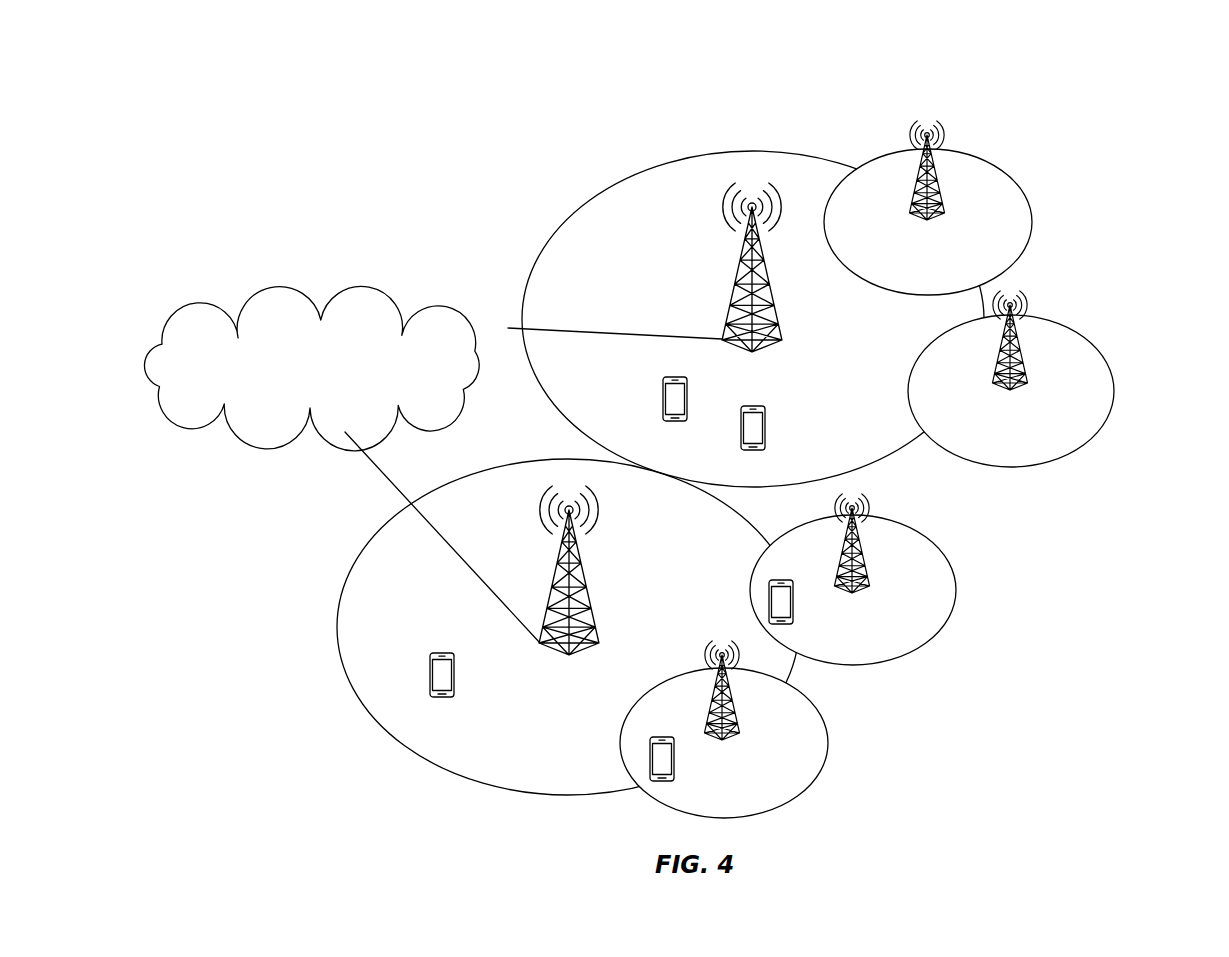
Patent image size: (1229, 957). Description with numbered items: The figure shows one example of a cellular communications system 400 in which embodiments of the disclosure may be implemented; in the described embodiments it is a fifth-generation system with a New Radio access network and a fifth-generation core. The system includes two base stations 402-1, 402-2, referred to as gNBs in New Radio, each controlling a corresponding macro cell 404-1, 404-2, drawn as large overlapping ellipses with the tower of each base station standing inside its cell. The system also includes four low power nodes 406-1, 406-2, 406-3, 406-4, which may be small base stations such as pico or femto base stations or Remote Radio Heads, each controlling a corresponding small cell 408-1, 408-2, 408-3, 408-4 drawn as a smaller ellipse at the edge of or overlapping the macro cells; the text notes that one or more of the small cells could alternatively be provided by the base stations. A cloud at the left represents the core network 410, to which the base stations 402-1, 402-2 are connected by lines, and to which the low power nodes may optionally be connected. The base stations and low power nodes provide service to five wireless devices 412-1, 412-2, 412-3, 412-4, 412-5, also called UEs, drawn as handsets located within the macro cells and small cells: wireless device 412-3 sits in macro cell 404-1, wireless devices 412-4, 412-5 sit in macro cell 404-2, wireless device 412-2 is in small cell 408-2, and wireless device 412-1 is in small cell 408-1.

The cellular communications system 400 is at (1102, 111).
The base station 402-1 is at (590, 593).
The base station 402-2 is at (770, 294).
The macro cell 404-1 is at (432, 772).
The macro cell 404-2 is at (759, 150).
The low power node 406-1 is at (737, 722).
The low power node 406-2 is at (860, 578).
The low power node 406-3 is at (1022, 373).
The low power node 406-4 is at (931, 201).
The small cell 408-1 is at (826, 746).
The small cell 408-2 is at (957, 601).
The small cell 408-3 is at (1113, 398).
The small cell 408-4 is at (1030, 210).
The core network 410 is at (311, 368).
The wireless device 412-1 is at (685, 719).
The wireless device 412-2 is at (785, 578).
The wireless device 412-3 is at (455, 670).
The wireless device 412-4 is at (690, 402).
The wireless device 412-5 is at (768, 427).